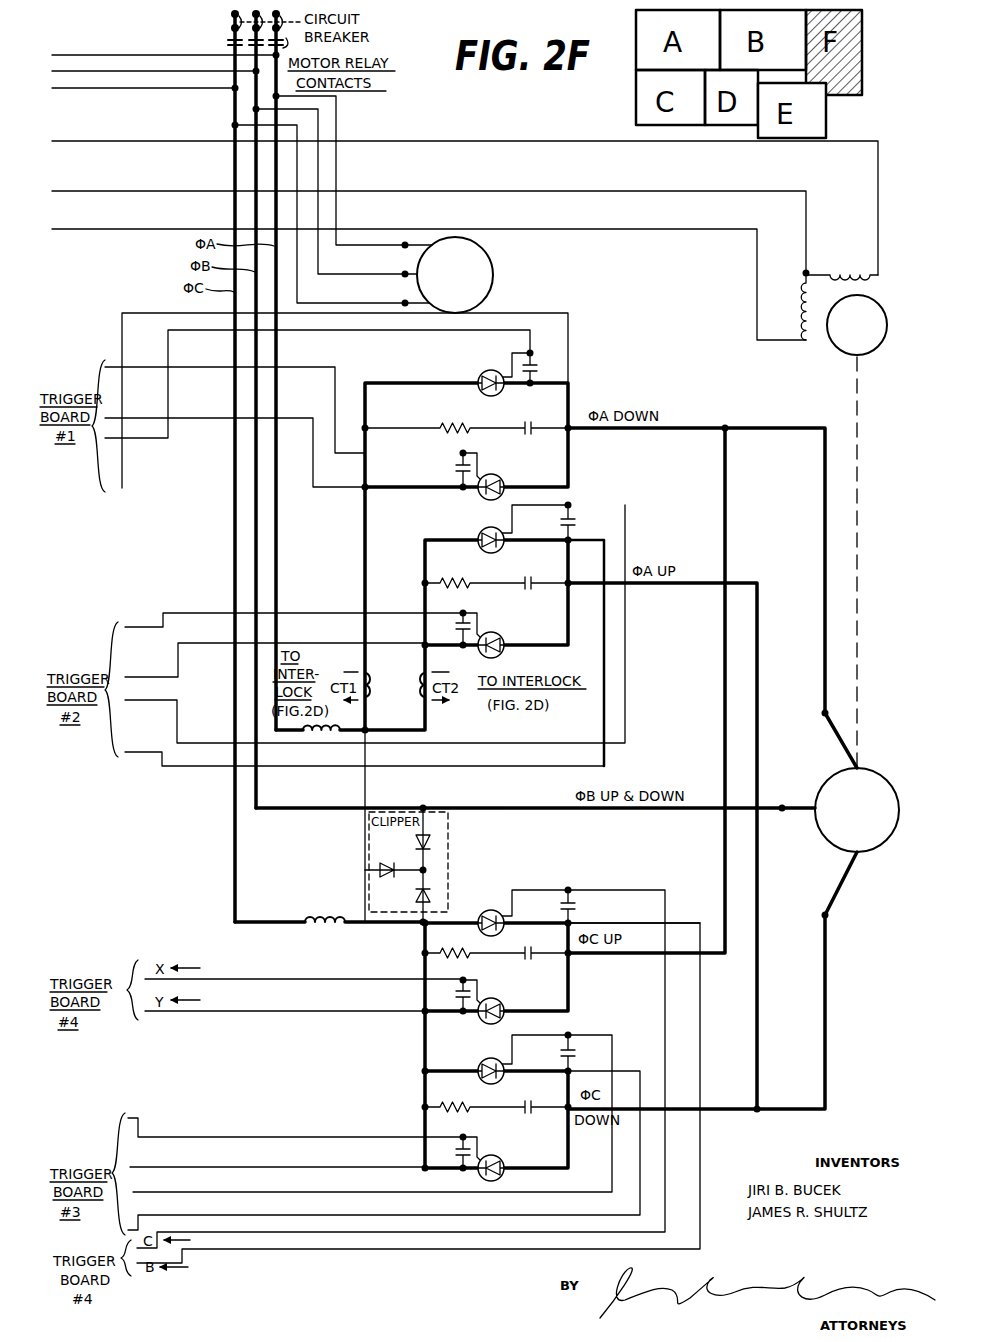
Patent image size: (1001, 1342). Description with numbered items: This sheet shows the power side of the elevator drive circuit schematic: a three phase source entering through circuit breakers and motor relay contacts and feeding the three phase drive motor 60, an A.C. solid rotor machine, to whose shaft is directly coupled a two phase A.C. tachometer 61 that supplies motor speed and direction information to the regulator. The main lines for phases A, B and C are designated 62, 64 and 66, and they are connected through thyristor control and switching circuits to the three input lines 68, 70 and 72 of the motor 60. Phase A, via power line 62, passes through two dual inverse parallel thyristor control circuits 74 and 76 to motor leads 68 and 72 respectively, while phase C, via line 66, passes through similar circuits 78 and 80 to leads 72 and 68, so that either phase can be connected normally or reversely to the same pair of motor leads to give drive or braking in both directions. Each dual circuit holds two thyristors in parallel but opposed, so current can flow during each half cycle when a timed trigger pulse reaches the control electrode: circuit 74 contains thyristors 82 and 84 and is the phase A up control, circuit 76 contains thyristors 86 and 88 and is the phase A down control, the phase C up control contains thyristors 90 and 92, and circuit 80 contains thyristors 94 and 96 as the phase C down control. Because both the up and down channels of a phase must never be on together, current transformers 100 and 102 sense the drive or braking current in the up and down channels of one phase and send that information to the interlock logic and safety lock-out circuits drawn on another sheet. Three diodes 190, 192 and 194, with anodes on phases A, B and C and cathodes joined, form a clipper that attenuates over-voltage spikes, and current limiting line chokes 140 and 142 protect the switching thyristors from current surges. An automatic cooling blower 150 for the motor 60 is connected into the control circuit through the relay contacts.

The three phase drive motor 60 is at (868, 768).
The two phase A.C. tachometer 61 is at (884, 338).
The phase A main line 62 is at (276, 545).
The phase B main line 64 is at (256, 522).
The phase C main line 66 is at (235, 497).
The motor input lead 68 is at (784, 426).
The motor input lead 70 is at (782, 808).
The motor input lead 72 is at (780, 1108).
The dual inverse parallel thyristor control circuit 74 is at (506, 578).
The dual inverse parallel thyristor control circuit 76 is at (468, 424).
The dual inverse parallel thyristor control circuit 78 is at (492, 950).
The dual inverse parallel thyristor control circuit 80 is at (495, 1096).
The thyristor 82 is at (501, 635).
The thyristor 84 is at (482, 530).
The thyristor 86 is at (488, 474).
The thyristor 88 is at (486, 376).
The thyristor 90 is at (500, 1002).
The thyristor 92 is at (490, 910).
The thyristor 94 is at (492, 1155).
The thyristor 96 is at (494, 1058).
The current transformer 100 is at (424, 699).
The current transformer 102 is at (371, 682).
The current limiting line choke 140 is at (327, 738).
The current limiting line choke 142 is at (319, 930).
The automatic cooling blower 150 is at (493, 275).
The clipper diode 190 is at (378, 871).
The clipper diode 192 is at (433, 840).
The clipper diode 194 is at (431, 896).